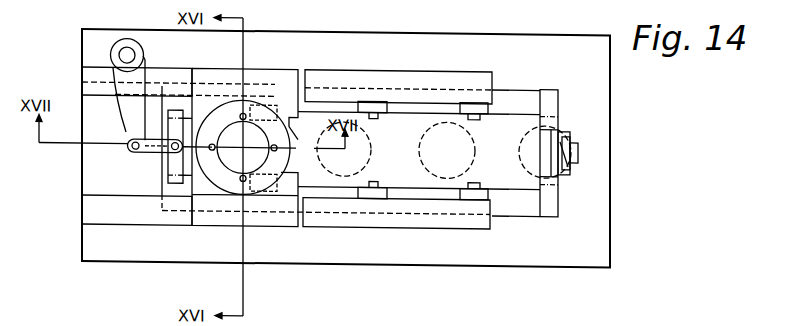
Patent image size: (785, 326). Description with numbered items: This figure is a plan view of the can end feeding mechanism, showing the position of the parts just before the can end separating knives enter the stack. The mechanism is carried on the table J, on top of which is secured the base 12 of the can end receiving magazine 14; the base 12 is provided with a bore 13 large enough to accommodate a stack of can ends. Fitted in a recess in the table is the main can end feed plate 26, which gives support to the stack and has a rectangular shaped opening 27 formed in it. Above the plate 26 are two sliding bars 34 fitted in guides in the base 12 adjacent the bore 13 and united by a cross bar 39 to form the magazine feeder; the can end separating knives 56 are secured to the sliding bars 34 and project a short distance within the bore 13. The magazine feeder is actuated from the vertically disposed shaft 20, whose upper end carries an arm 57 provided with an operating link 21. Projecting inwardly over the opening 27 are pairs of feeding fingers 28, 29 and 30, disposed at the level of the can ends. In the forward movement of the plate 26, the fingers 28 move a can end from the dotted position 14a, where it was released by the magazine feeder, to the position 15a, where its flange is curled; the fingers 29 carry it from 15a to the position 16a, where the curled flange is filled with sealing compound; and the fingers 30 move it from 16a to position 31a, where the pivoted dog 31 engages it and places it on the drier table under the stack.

The table J is at (533, 254).
The vertically disposed shaft 20 is at (118, 52).
The arm 57 is at (123, 112).
The operating link 21 is at (154, 151).
The cross bar 39 is at (173, 126).
The sliding bars 34 is at (190, 184).
The can end receiving magazine 14 is at (220, 162).
The bore 13 is at (227, 119).
The can end release position 14a is at (247, 115).
The base 12 is at (235, 187).
The feeding fingers 28 is at (243, 147).
The can end separating knives 56 is at (266, 150).
The main can end feed plate 26 is at (521, 92).
The feeding fingers 29 is at (368, 119).
The rectangular shaped opening 27 is at (472, 114).
The feeding fingers 30 is at (470, 171).
The curler position 15a is at (337, 173).
The liner position 16a is at (438, 172).
The delivery position 31a is at (560, 121).
The pivoted dog 31 is at (578, 145).